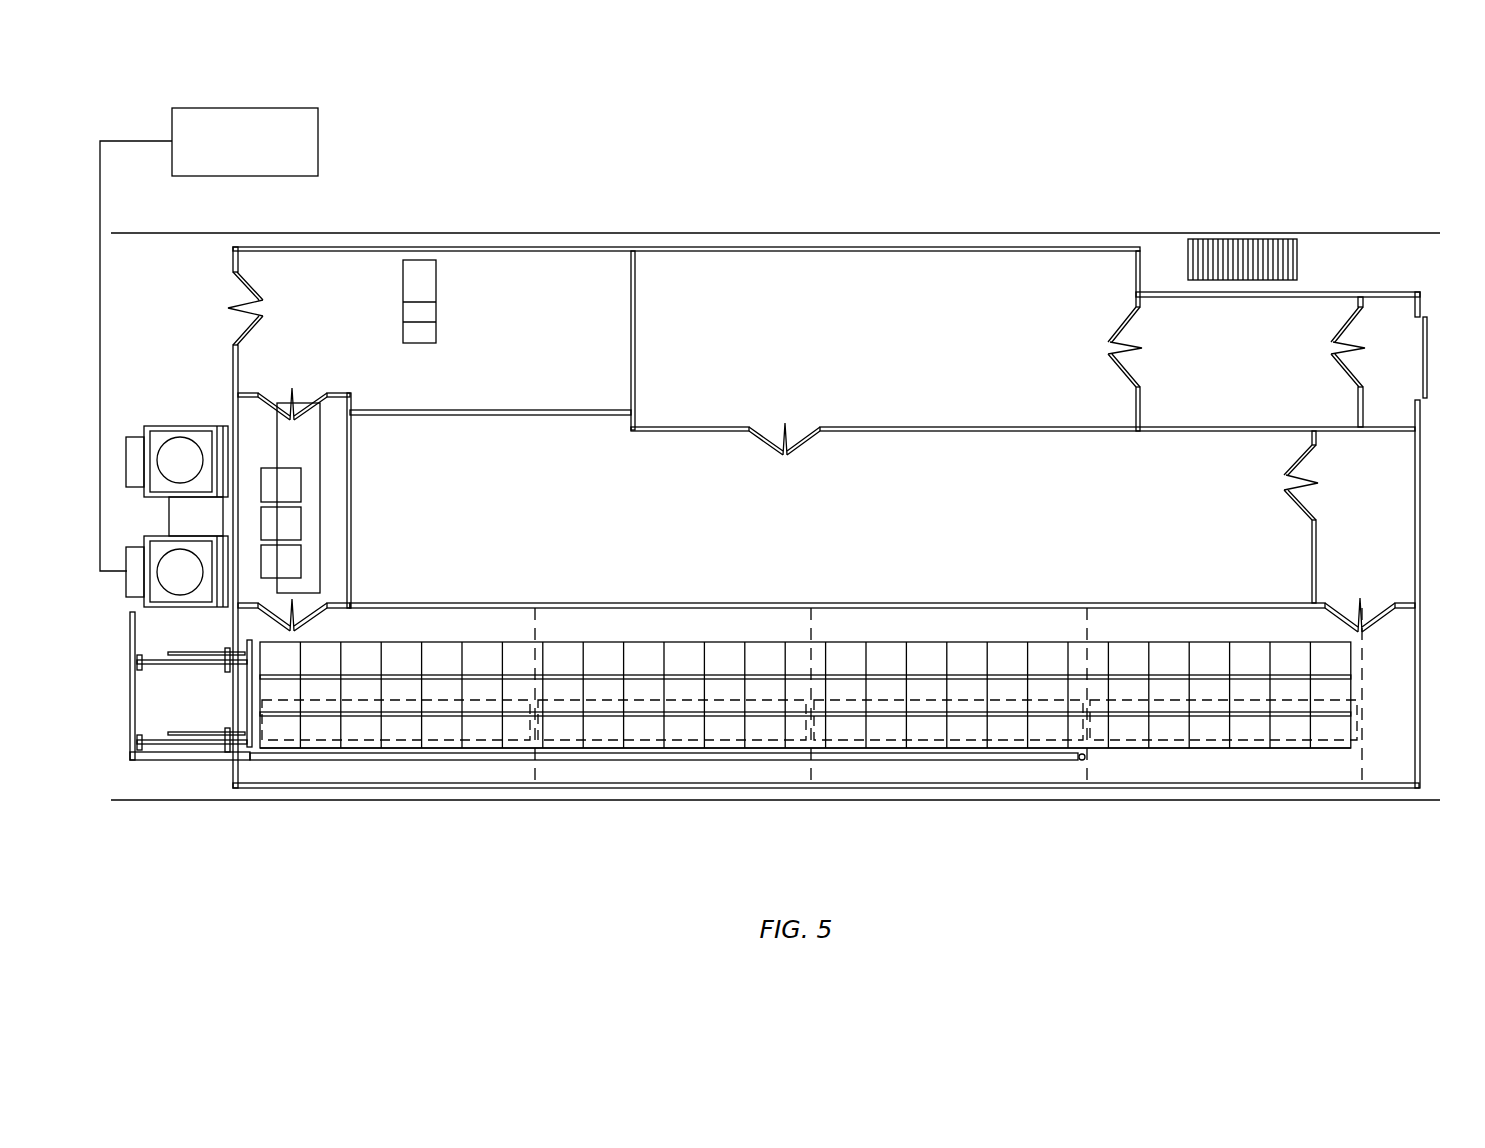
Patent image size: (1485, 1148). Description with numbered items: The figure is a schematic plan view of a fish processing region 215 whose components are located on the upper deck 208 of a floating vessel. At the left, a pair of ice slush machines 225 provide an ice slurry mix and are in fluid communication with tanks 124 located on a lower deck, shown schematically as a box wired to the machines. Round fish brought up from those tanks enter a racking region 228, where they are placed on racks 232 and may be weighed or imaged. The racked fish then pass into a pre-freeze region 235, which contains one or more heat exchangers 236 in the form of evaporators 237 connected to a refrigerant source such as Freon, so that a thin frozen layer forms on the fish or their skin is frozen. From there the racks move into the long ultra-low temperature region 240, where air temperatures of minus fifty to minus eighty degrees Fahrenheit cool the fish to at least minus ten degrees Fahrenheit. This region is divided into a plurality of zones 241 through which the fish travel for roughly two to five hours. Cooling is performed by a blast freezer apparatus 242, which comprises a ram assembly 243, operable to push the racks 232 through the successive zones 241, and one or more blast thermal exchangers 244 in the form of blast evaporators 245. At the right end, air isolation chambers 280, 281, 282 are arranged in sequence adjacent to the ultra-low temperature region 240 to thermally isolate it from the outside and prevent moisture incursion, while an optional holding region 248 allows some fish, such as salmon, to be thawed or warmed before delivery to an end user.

The tanks 124 is at (281, 99).
The fish processing region 215 is at (1410, 255).
The racks 232 is at (422, 270).
The racking region 228 is at (537, 288).
The holding region 248 is at (855, 290).
The air isolation chamber 282 is at (1312, 325).
The air isolation chamber 281 is at (1412, 348).
The upper deck 208 is at (1425, 505).
The pre-freeze region 235 is at (333, 425).
The ice slush machines 225 is at (130, 525).
The evaporators 237 is at (310, 458).
The heat exchangers 236 is at (330, 470).
The air isolation chamber 280 is at (1372, 555).
The ultra-low temperature region 240 is at (928, 637).
The zones 241 is at (437, 636).
The ram assembly 243 is at (147, 763).
The blast freezer apparatus 242 is at (255, 750).
The blast evaporators 245 is at (408, 705).
The blast thermal exchangers 244 is at (514, 745).